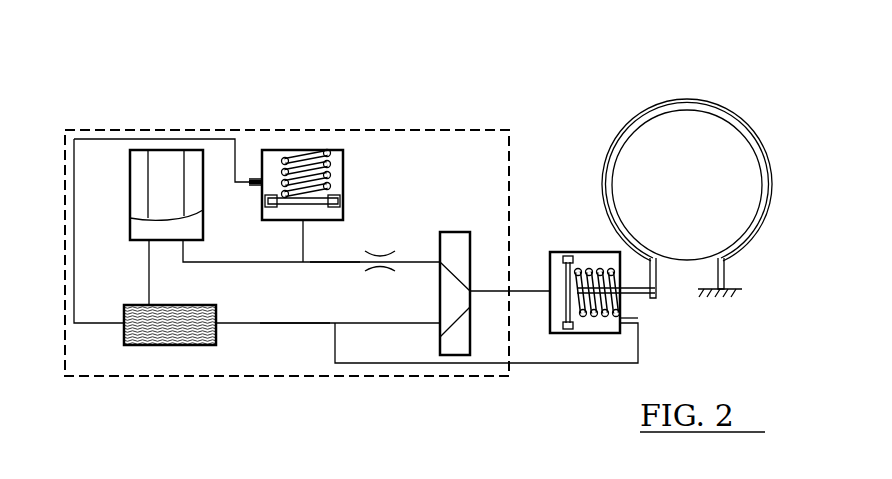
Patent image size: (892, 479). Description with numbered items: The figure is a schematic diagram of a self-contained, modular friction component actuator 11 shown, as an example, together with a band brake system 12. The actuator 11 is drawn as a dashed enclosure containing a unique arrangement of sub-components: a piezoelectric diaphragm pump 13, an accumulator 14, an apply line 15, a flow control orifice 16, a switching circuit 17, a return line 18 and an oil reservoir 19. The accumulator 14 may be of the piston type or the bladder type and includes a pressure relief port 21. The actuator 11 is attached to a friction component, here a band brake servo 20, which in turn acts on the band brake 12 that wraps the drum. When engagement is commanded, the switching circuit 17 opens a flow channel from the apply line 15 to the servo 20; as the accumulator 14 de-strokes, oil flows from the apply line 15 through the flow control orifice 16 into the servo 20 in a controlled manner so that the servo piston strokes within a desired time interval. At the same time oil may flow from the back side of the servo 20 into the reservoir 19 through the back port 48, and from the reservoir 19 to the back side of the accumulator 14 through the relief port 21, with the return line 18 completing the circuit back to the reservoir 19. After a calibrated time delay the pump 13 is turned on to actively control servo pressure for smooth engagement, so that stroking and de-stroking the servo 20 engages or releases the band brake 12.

The modular friction component actuator 11 is at (262, 128).
The band brake system 12 is at (650, 112).
The piezoelectric diaphragm pump 13 is at (130, 218).
The accumulator 14 is at (333, 150).
The apply line 15 is at (326, 262).
The flow control orifice 16 is at (377, 257).
The switching circuit 17 is at (457, 232).
The return line 18 is at (290, 323).
The oil reservoir 19 is at (176, 345).
The band brake servo 20 is at (577, 252).
The pressure relief port 21 is at (250, 184).
The back port 48 is at (628, 320).